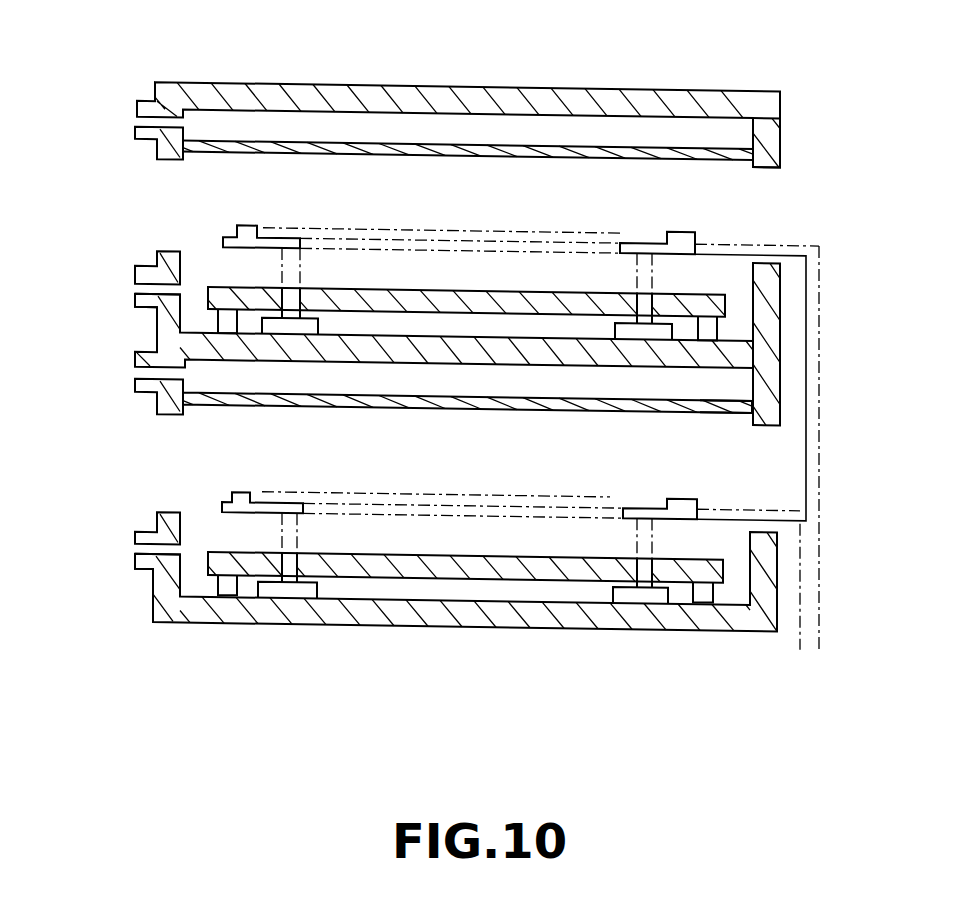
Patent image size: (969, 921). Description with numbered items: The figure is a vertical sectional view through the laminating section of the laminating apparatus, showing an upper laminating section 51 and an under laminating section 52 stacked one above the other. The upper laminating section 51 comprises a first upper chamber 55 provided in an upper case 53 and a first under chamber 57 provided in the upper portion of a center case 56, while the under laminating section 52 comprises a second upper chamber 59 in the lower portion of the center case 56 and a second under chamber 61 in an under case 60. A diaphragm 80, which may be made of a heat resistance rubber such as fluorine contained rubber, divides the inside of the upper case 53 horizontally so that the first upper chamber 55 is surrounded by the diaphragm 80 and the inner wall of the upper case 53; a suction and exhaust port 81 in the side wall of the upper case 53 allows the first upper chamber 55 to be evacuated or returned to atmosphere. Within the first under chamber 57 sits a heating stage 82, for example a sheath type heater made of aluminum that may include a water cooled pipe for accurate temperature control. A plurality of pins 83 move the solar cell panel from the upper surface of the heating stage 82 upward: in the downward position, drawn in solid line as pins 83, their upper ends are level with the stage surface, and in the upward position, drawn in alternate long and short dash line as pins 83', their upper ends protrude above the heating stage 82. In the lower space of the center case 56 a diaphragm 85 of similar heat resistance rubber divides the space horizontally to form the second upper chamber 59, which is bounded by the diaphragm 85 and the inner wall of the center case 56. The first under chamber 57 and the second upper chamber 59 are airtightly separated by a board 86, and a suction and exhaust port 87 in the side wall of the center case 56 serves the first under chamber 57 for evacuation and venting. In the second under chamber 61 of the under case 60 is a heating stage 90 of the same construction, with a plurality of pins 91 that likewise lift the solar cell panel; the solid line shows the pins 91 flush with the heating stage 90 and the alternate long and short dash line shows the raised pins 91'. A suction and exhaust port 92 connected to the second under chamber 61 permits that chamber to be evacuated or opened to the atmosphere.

The upper laminating section 51 is at (203, 191).
The under laminating section 52 is at (203, 459).
The upper case 53 is at (520, 88).
The first upper chamber 55 is at (673, 132).
The center case 56 is at (775, 312).
The first under chamber 57 is at (214, 253).
The second upper chamber 59 is at (738, 383).
The under case 60 is at (493, 630).
The second under chamber 61 is at (232, 531).
The diaphragm 80 is at (748, 163).
The suction and exhaust port 81 is at (142, 126).
The heating stage 82 is at (471, 300).
The pins 83 is at (467, 253).
The pins in upward position 83' is at (475, 229).
The diaphragm 85 is at (556, 406).
The board 86 is at (459, 352).
The suction and exhaust port 87 is at (143, 290).
The heating stage 90 is at (418, 578).
The pins 91 is at (479, 603).
The pins in upward position 91' is at (474, 475).
The suction and exhaust port 92 is at (143, 548).